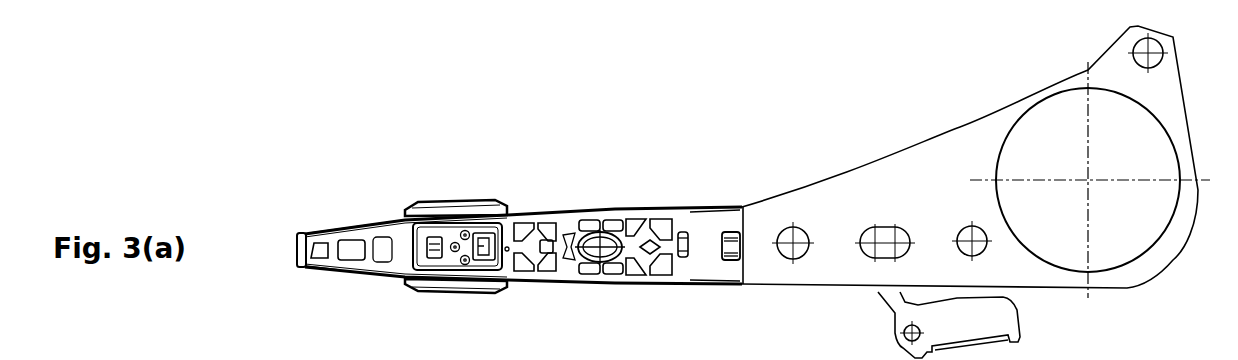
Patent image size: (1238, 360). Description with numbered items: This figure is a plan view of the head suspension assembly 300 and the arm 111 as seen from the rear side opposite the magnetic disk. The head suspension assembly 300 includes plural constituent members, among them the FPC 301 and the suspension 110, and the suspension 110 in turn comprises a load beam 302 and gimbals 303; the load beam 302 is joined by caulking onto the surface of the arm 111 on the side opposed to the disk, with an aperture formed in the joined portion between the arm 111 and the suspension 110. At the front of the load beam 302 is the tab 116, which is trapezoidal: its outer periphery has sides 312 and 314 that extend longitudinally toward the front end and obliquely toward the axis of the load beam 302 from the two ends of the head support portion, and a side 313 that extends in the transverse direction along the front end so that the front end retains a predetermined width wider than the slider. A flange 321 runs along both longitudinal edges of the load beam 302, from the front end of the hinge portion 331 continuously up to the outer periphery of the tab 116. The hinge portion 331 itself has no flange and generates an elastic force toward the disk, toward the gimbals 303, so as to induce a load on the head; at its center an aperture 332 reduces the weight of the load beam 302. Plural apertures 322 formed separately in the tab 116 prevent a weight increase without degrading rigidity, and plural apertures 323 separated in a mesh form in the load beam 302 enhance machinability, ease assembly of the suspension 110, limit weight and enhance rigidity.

The head suspension assembly 300 is at (660, 157).
The suspension 110 is at (505, 183).
The load beam 302 is at (563, 203).
The aperture 332 is at (737, 213).
The arm 111 is at (857, 183).
The side 313 is at (297, 247).
The side 312 is at (350, 222).
The side 314 is at (307, 270).
The tab 116 is at (323, 263).
The apertures 322 is at (357, 258).
The gimbals 303 is at (500, 287).
The apertures 323 is at (547, 273).
The flange 321 is at (667, 278).
The hinge portion 331 is at (732, 278).
The FPC 301 is at (880, 302).